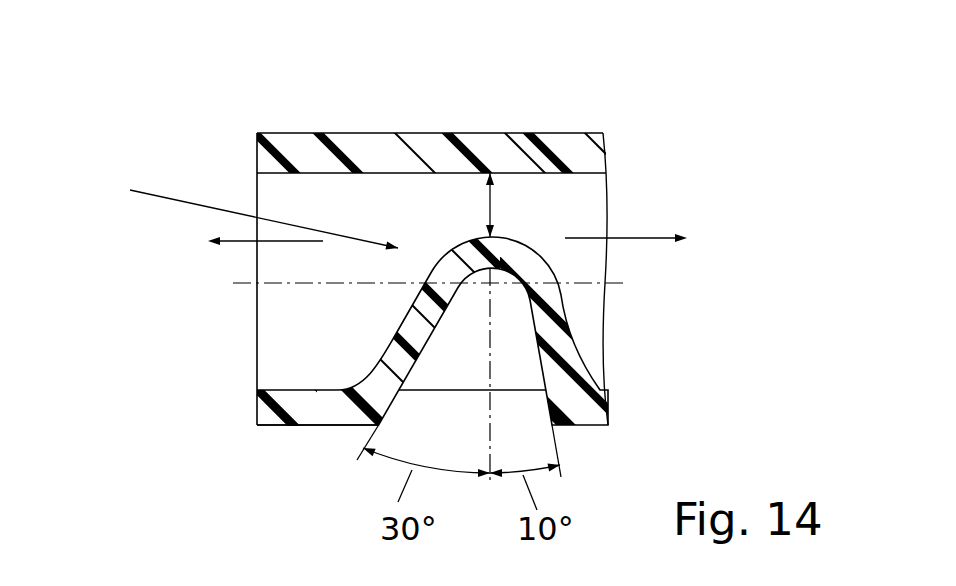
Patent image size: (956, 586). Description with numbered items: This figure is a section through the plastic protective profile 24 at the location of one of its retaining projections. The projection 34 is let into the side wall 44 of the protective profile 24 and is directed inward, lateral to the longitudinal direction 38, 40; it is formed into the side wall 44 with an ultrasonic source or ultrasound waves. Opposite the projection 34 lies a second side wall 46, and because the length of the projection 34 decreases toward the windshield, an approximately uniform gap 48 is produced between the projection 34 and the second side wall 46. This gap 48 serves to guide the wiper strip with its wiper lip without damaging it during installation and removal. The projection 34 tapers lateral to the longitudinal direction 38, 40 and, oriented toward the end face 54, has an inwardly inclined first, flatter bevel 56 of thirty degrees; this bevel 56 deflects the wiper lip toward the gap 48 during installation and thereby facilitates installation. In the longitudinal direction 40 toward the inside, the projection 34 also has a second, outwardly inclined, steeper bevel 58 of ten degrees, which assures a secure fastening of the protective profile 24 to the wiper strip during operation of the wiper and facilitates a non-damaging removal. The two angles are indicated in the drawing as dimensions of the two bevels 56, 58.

The plastic protective profile 24 is at (272, 131).
The projection 34 is at (241, 209).
The longitudinal direction 38 is at (295, 241).
The longitudinal direction 40 is at (632, 236).
The side wall 44 is at (315, 412).
The second side wall 46 is at (572, 150).
The gap 48 is at (433, 121).
The end face 54 is at (169, 97).
The first bevel 56 is at (380, 316).
The second bevel 58 is at (572, 342).